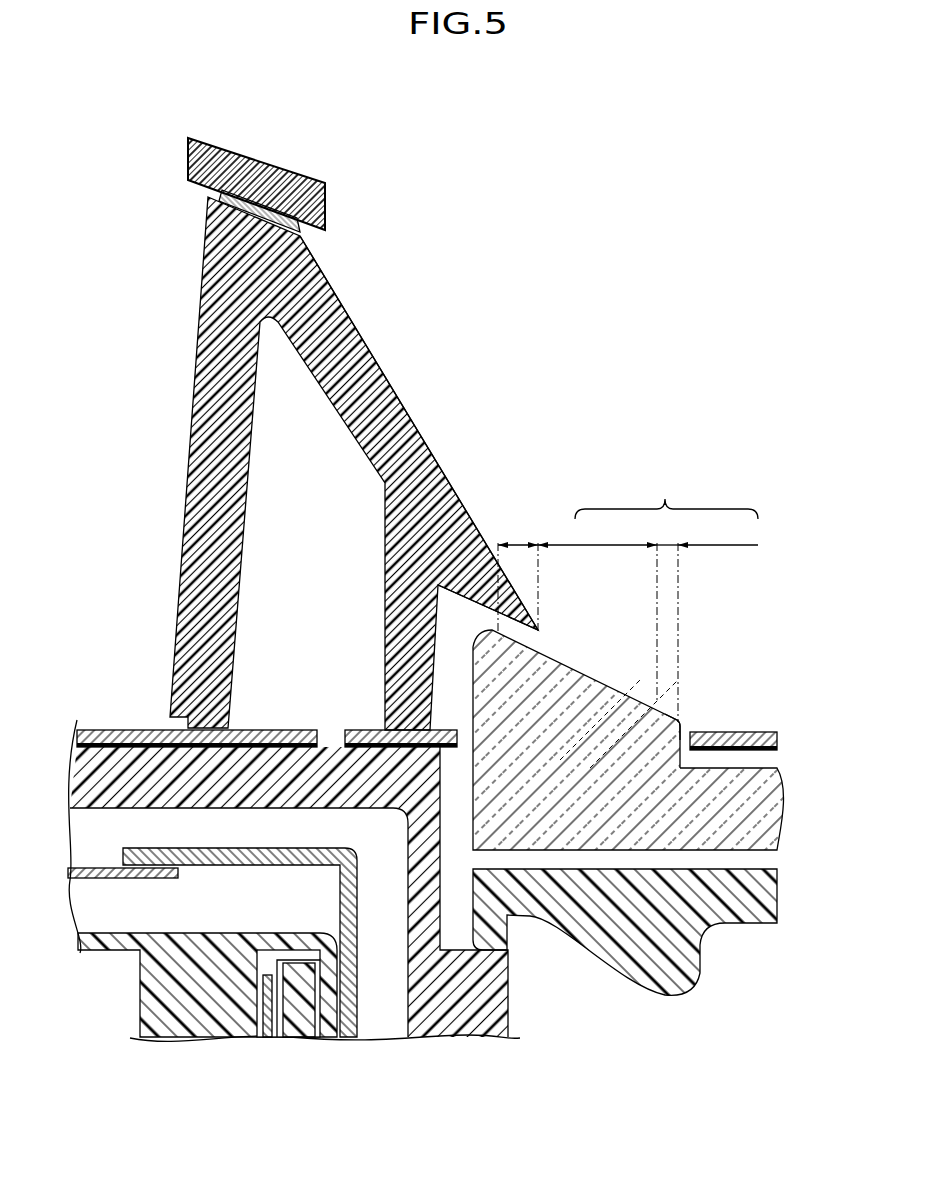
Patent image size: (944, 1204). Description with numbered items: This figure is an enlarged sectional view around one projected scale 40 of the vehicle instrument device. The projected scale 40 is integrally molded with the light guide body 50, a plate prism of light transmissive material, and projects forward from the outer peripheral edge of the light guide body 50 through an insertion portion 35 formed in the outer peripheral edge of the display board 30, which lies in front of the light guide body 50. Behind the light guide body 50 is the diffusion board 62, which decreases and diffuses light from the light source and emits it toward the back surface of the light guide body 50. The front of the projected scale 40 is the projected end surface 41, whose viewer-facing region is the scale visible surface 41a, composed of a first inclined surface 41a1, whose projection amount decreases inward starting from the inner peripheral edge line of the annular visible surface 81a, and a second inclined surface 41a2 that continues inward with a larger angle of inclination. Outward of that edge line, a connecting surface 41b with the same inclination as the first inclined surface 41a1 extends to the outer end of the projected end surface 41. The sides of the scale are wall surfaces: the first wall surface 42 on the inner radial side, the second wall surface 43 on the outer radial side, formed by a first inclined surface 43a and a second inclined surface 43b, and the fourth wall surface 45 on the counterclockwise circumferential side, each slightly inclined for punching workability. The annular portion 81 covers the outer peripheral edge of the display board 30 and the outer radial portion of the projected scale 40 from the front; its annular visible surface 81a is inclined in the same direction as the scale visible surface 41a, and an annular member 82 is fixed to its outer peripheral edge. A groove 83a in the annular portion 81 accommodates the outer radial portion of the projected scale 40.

The display board 30 is at (747, 730).
The insertion portion 35 is at (693, 757).
The projected scale 40 is at (615, 584).
The projected end surface 41 is at (595, 678).
The scale visible surface 41a is at (666, 510).
The first inclined surface 41a1 is at (597, 608).
The second inclined surface 41a2 is at (718, 619).
The connecting surface 41b is at (518, 573).
The first wall surface 42 is at (678, 732).
The second wall surface 43 is at (275, 723).
The first inclined surface 43a is at (473, 678).
The second inclined surface 43b is at (437, 797).
The fourth wall surface 45 is at (625, 710).
The light guide body 50 is at (770, 832).
The diffusion board 62 is at (738, 923).
The annular portion 81 is at (354, 463).
The annular visible surface 81a is at (432, 443).
The annular member 82 is at (275, 162).
The groove 83a is at (457, 622).